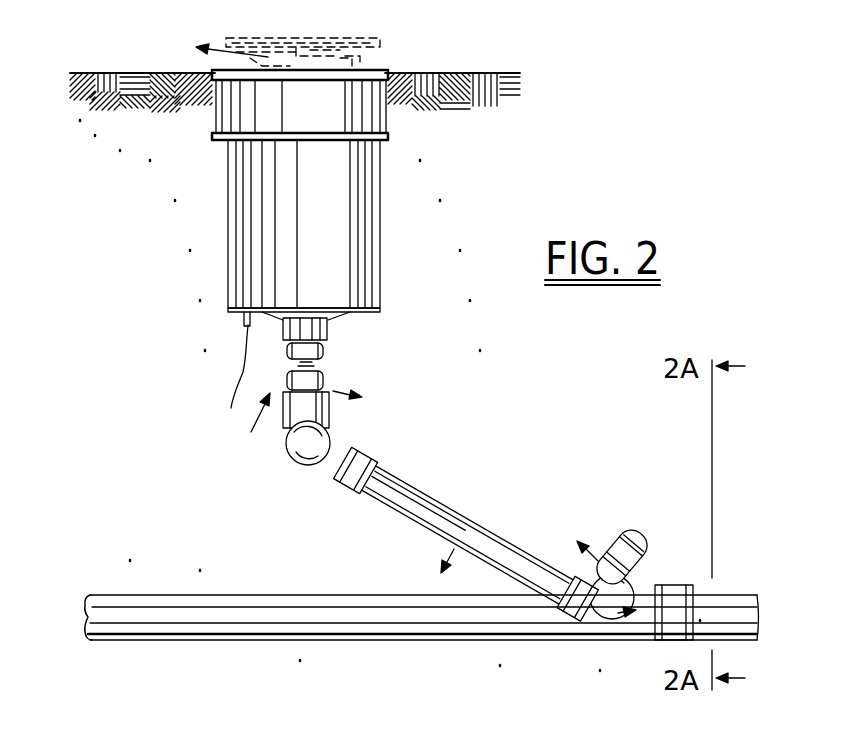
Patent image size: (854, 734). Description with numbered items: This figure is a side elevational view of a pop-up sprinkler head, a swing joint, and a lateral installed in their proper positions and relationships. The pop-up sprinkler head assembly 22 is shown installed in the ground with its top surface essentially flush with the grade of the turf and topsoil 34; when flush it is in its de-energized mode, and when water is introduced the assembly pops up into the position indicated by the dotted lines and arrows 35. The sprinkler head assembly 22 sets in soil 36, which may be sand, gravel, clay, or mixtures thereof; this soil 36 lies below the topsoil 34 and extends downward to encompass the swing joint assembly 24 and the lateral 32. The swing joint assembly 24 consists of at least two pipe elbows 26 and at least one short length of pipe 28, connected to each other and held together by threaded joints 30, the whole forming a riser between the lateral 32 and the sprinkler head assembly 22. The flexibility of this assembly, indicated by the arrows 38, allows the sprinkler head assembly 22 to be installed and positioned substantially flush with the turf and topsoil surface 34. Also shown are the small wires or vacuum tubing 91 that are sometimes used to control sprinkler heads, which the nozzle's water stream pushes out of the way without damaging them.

The pop-up sprinkler head assembly 22 is at (380, 269).
The swing joint assembly 24 is at (485, 491).
The pipe elbows 26 is at (290, 458).
The short length of pipe 28 is at (323, 380).
The threaded joints 30 is at (346, 480).
The lateral 32 is at (457, 637).
The topsoil 34 is at (514, 90).
The dotted lines and arrows 35 is at (338, 52).
The soil 36 is at (457, 164).
The arrows 38 is at (486, 500).
The small wires or vacuum tubing 91 is at (243, 371).